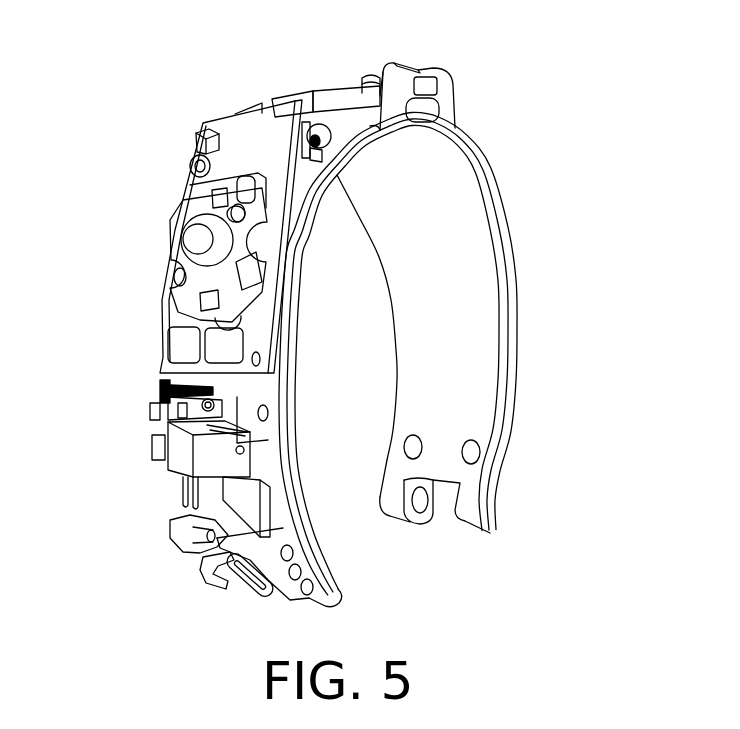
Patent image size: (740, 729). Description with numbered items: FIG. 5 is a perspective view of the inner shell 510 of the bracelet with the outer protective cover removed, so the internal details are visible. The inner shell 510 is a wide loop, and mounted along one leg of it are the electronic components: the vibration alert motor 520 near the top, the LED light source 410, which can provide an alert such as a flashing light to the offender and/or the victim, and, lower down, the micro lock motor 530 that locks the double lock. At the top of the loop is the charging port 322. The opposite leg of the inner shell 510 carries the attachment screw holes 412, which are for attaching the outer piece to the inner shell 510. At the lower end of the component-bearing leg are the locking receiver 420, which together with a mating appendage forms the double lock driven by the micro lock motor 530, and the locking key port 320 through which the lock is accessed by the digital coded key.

The charging port 322 is at (465, 65).
The vibration alert motor 520 is at (262, 95).
The inner shell 510 is at (547, 200).
The LED light source 410 is at (200, 240).
The attachment screw holes 412 is at (416, 440).
The micro lock motor 530 is at (193, 513).
The locking key port 320 is at (337, 562).
The locking intersection receiver 420 is at (272, 610).